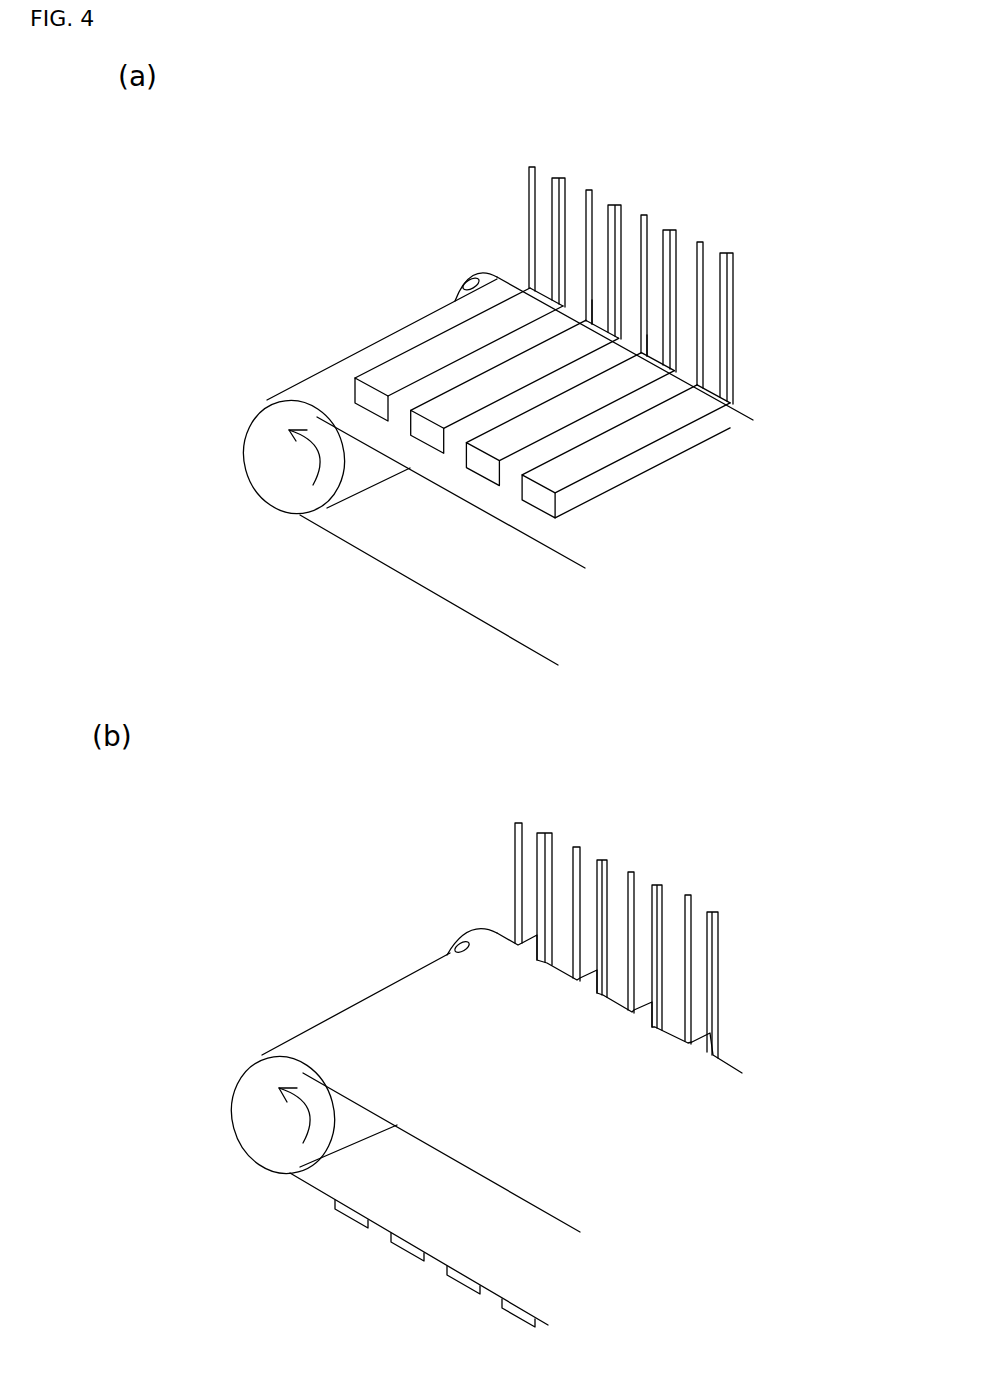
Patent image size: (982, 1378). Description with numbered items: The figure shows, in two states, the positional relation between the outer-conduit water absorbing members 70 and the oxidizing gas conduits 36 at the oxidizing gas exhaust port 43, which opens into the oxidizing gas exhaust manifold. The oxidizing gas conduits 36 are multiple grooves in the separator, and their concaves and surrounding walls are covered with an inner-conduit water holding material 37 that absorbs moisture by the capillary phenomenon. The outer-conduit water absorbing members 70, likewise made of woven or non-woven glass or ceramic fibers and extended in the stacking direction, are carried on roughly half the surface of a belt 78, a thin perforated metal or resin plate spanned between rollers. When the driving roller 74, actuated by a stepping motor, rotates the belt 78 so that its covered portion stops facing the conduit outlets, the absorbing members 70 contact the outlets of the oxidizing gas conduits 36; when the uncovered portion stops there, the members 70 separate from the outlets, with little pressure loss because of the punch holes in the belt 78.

The oxidizing gas conduit 36 is at (675, 252).
The inner-conduit water holding material 37 is at (641, 274).
The oxidizing gas exhaust port 43 is at (463, 287).
The outer-conduit water absorbing member 70 is at (567, 397).
The driving roller 74 is at (273, 468).
The belt 78 is at (483, 513).